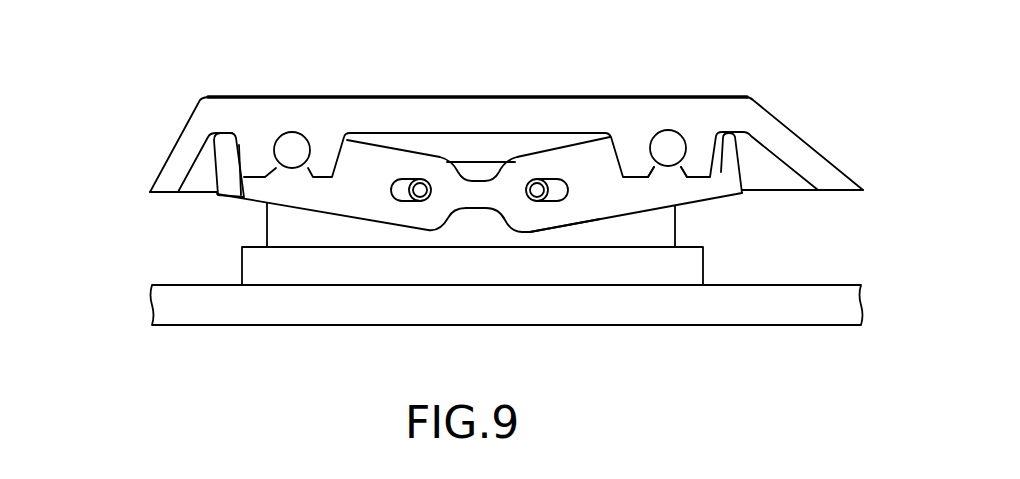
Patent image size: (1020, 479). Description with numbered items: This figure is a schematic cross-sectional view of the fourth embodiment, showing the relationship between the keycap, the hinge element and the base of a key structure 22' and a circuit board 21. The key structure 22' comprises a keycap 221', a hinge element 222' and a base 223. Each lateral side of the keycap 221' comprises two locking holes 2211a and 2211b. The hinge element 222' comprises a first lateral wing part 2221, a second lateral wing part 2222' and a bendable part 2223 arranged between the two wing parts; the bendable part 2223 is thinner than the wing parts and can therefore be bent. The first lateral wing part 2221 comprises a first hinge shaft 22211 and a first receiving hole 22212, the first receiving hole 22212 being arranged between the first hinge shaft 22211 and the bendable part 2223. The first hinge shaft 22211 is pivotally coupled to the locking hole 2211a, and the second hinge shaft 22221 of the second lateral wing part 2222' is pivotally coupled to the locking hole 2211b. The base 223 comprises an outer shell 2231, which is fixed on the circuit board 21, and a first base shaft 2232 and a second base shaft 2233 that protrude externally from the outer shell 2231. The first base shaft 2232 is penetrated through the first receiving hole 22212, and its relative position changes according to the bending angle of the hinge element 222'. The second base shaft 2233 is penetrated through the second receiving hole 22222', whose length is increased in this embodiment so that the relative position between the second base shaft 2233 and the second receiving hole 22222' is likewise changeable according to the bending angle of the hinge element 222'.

The circuit board 21 is at (749, 305).
The key structure 22' is at (459, 213).
The keycap 221' is at (469, 123).
The locking hole 2211a is at (286, 148).
The locking hole 2211b is at (668, 146).
The first hinge shaft 22211 is at (280, 135).
The second hinge shaft 22221 is at (671, 136).
The hinge element 222' is at (535, 213).
The first lateral wing part 2221 is at (262, 189).
The first receiving hole 22212 is at (398, 190).
The second lateral wing part 2222' is at (793, 143).
The second receiving hole 22222' is at (545, 127).
The bendable part 2223 is at (477, 197).
The outer shell 2231 is at (580, 226).
The first base shaft 2232 is at (422, 194).
The second base shaft 2233 is at (530, 190).
The base 223 is at (388, 268).